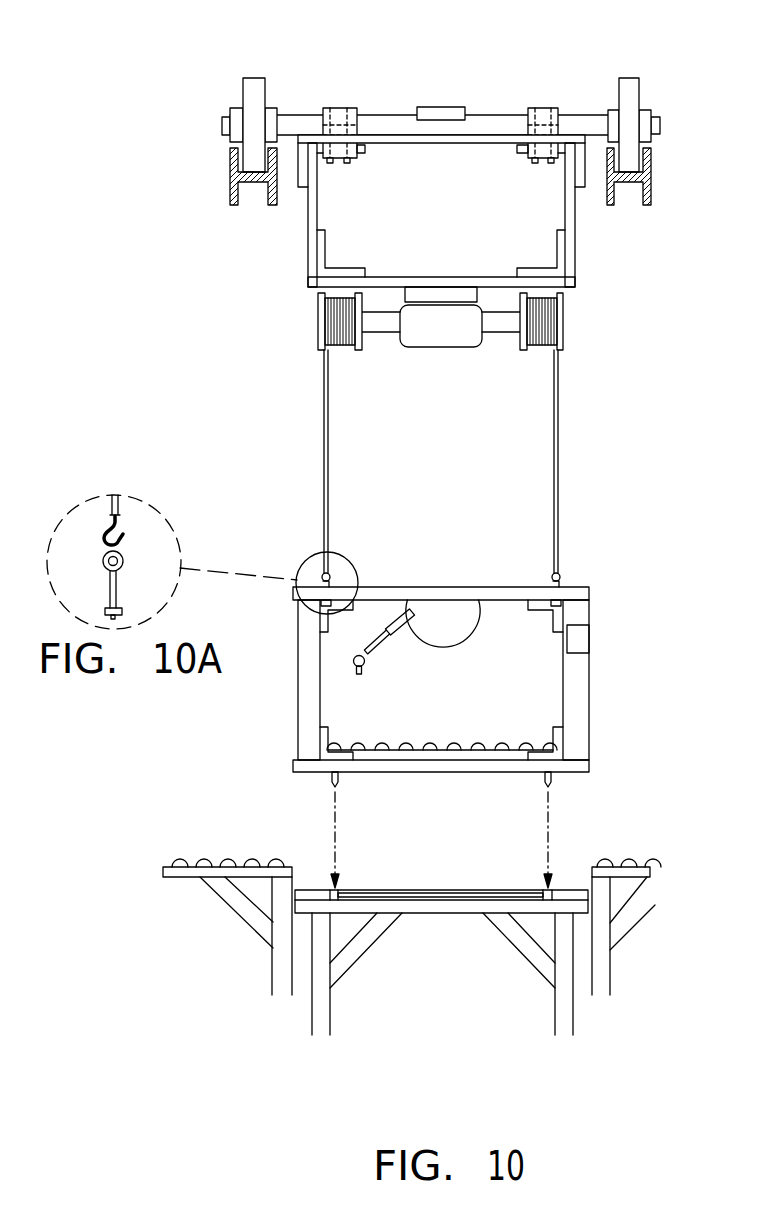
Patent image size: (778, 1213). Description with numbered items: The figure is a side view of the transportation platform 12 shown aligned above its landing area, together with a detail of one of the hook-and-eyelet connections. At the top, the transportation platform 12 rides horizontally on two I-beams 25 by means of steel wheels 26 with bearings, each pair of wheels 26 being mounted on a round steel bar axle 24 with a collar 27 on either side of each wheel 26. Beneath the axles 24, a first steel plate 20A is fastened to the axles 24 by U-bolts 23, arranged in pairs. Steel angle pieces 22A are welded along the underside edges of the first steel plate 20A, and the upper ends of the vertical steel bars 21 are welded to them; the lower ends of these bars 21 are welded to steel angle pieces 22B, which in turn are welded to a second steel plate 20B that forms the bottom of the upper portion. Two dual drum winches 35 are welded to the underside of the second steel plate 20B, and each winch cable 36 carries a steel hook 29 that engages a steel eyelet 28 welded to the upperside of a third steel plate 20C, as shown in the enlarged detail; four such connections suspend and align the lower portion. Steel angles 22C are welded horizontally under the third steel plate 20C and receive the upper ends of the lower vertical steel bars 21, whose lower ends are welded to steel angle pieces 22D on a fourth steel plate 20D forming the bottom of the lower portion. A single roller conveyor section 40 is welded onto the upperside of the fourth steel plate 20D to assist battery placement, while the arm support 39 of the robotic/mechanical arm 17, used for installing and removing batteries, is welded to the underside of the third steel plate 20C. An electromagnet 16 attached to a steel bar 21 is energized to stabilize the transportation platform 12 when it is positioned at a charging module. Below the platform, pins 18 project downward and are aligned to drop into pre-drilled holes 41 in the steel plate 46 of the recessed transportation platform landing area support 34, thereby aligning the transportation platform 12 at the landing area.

In FIG. 10, the transportation platform 12 is at (642, 582).
In FIG. 10, the electromagnet 16 is at (579, 641).
In FIG. 10, the robotic/mechanical arm 17 is at (382, 644).
In FIG. 10, the pin 18 is at (340, 781).
In FIG. 10, the first steel plate 20A is at (452, 147).
In FIG. 10, the second steel plate 20B is at (455, 279).
In FIG. 10, the third steel plate 20C is at (435, 586).
In FIG. 10, the fourth steel plate 20D is at (589, 766).
In FIG. 10, the vertical steel bar 21 is at (317, 190).
In FIG. 10, the steel angle piece 22A is at (300, 190).
In FIG. 10, the steel angle piece 22B is at (326, 256).
In FIG. 10, the steel angle 22C is at (312, 626).
In FIG. 10, the steel angle piece 22D is at (329, 735).
In FIG. 10, the U-bolt 23 is at (343, 108).
In FIG. 10, the round steel bar axle 24 is at (661, 125).
In FIG. 10, the I-beam 25 is at (230, 186).
In FIG. 10, the steel wheel 26 is at (252, 90).
In FIG. 10, the collar 27 is at (269, 108).
In FIG. 10A, the steel eyelet 28 is at (118, 585).
In FIG. 10A, the steel hook 29 is at (127, 534).
In FIG. 10, the transportation platform landing area support 34 is at (440, 914).
In FIG. 10, the dual drum winch 35 is at (318, 325).
In FIG. 10, the winch cable 36 is at (323, 482).
In FIG. 10, the arm support 39 is at (445, 625).
In FIG. 10, the roller conveyor section 40 is at (478, 746).
In FIG. 10, the pre-drilled hole 41 is at (340, 891).
In FIG. 10, the steel plate 46 is at (445, 892).